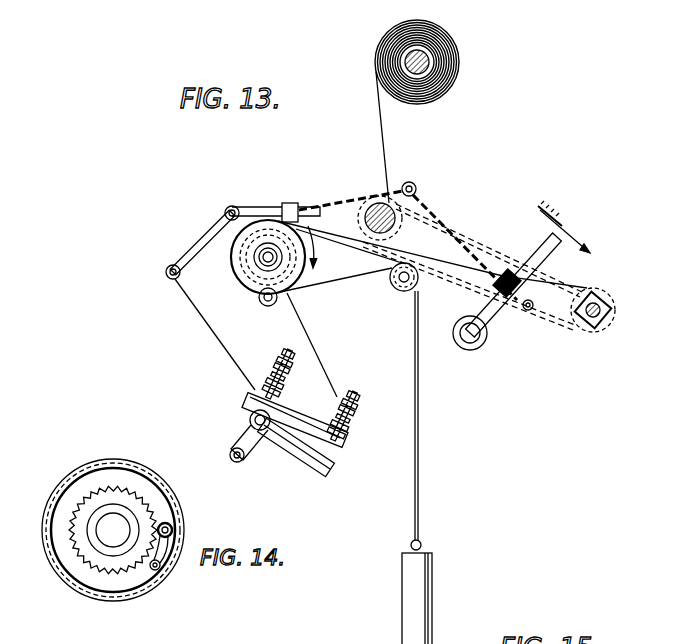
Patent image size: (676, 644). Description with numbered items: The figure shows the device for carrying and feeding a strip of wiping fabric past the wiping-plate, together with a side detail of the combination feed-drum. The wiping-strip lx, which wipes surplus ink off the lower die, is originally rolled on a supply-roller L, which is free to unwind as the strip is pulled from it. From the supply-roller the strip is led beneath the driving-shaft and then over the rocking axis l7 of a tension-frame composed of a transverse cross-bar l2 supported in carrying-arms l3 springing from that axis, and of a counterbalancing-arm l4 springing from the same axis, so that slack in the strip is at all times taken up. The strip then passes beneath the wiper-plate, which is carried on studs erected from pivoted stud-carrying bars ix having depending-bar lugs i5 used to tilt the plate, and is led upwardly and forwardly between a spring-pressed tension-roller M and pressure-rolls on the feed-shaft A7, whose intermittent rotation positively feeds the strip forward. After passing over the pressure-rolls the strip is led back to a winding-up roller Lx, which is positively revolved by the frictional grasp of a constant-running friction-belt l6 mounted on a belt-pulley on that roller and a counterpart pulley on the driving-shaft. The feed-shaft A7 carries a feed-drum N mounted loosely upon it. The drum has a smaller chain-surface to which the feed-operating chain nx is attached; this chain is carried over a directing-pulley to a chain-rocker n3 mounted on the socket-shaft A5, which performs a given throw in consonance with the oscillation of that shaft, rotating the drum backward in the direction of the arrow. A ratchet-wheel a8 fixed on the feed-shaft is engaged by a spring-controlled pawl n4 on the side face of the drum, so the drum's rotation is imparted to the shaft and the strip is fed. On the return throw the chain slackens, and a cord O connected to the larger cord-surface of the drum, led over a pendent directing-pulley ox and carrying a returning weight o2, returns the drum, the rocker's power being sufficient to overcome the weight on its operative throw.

In FIG. 13, the supply-roller L is at (428, 63).
In FIG. 13, the stud-carrying bars Ix is at (385, 140).
In FIG. 13, the counterbalancing-arm l4 is at (297, 203).
In FIG. 13, the feed-operating chain nx is at (448, 224).
In FIG. 13, the rocking axis l7 is at (404, 233).
In FIG. 13, the feed-drum N is at (245, 287).
In FIG. 14, the feed-drum N is at (110, 459).
In FIG. 13, the tension-roller M is at (268, 306).
In FIG. 13, the feed-shaft A7 is at (272, 262).
In FIG. 14, the feed-shaft A7 is at (112, 536).
In FIG. 13, the carrying-arms l3 is at (190, 265).
In FIG. 13, the transverse cross-bar l2 is at (166, 273).
In FIG. 13, the wiping-strip lx is at (232, 206).
In FIG. 13, the directing-pulley ox is at (396, 291).
In FIG. 13, the cord O is at (420, 428).
In FIG. 13, the returning weight o2 is at (420, 583).
In FIG. 13, the friction-belt l6 is at (527, 258).
In FIG. 13, the chain-rocker n3 is at (521, 306).
In FIG. 13, the socket-shaft A5 is at (470, 338).
In FIG. 13, the winding-up roller Lx is at (607, 303).
In FIG. 13, the stud-carrying bars ix is at (305, 465).
In FIG. 13, the depending-bar lugs i5 is at (249, 433).
In FIG. 14, the ratchet-wheel a8 is at (125, 560).
In FIG. 14, the spring-controlled pawl n4 is at (172, 537).